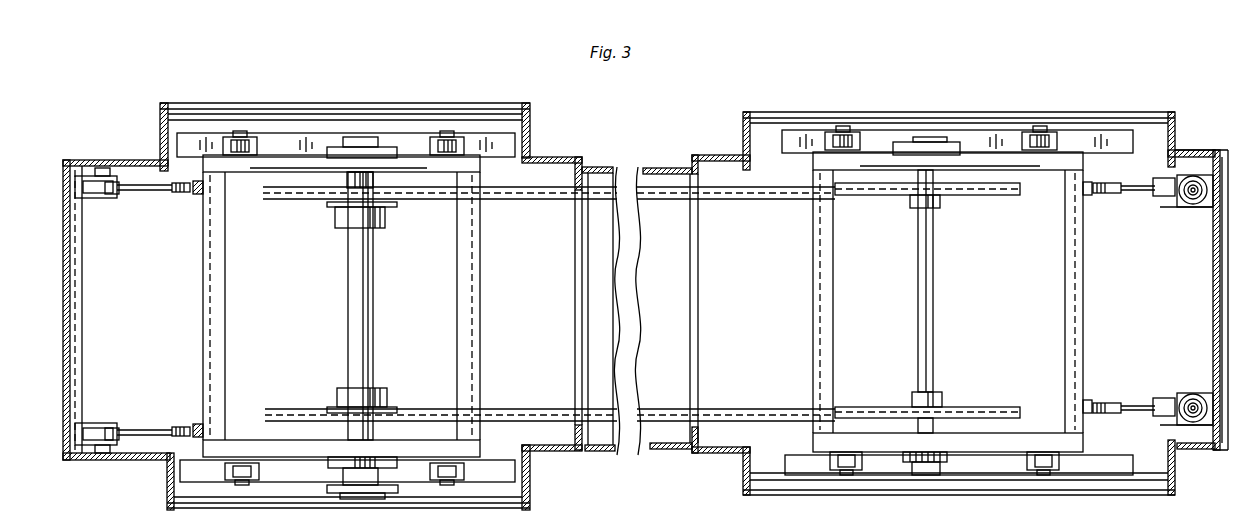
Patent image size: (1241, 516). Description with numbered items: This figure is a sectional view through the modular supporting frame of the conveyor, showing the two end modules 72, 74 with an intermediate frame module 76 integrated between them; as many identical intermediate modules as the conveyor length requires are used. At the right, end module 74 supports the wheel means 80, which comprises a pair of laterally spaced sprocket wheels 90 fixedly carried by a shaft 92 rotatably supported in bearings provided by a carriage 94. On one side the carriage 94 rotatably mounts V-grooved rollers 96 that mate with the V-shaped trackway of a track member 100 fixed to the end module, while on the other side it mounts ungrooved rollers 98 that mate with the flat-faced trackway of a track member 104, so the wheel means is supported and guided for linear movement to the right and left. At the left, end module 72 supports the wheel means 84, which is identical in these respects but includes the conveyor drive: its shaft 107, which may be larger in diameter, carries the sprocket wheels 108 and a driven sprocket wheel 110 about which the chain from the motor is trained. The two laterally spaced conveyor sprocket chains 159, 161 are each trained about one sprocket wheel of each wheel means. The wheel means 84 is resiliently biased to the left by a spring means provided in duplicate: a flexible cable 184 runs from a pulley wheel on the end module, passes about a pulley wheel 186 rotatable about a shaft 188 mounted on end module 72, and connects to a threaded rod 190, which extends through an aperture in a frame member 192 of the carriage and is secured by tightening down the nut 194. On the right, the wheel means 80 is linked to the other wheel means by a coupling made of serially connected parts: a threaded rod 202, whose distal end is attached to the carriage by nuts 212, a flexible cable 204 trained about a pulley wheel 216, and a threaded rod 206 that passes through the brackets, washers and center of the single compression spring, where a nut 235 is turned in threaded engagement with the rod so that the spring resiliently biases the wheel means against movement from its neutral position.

The end module 72 is at (386, 91).
The end module 74 is at (939, 103).
The intermediate frame module 76 is at (603, 162).
The wheel means 80 is at (806, 362).
The wheel means 84 is at (197, 289).
The sprocket wheel 90 is at (1001, 196).
The shaft 92 is at (935, 350).
The carriage 94 is at (1085, 290).
The V-grooved roller 96 is at (852, 472).
The ungrooved roller 98 is at (850, 133).
The track member 100 is at (1098, 474).
The track member 104 is at (1112, 140).
The shaft 107 is at (348, 296).
The sprocket wheel 108 is at (432, 202).
The driven sprocket wheel 110 is at (326, 485).
The conveyor sprocket chain 159 is at (536, 200).
The conveyor sprocket chain 161 is at (548, 408).
The flexible cable 184 is at (150, 193).
The pulley wheel 186 is at (120, 198).
The shaft 188 is at (105, 200).
The threaded rod 190 is at (185, 193).
The frame member 192 is at (215, 316).
The nut 194 is at (198, 196).
The threaded rod 202 is at (1108, 403).
The flexible cable 204 is at (1137, 406).
The threaded rod 206 is at (1193, 205).
The nut 212 is at (1090, 400).
The pulley wheel 216 is at (1158, 398).
The nut 235 is at (1178, 205).